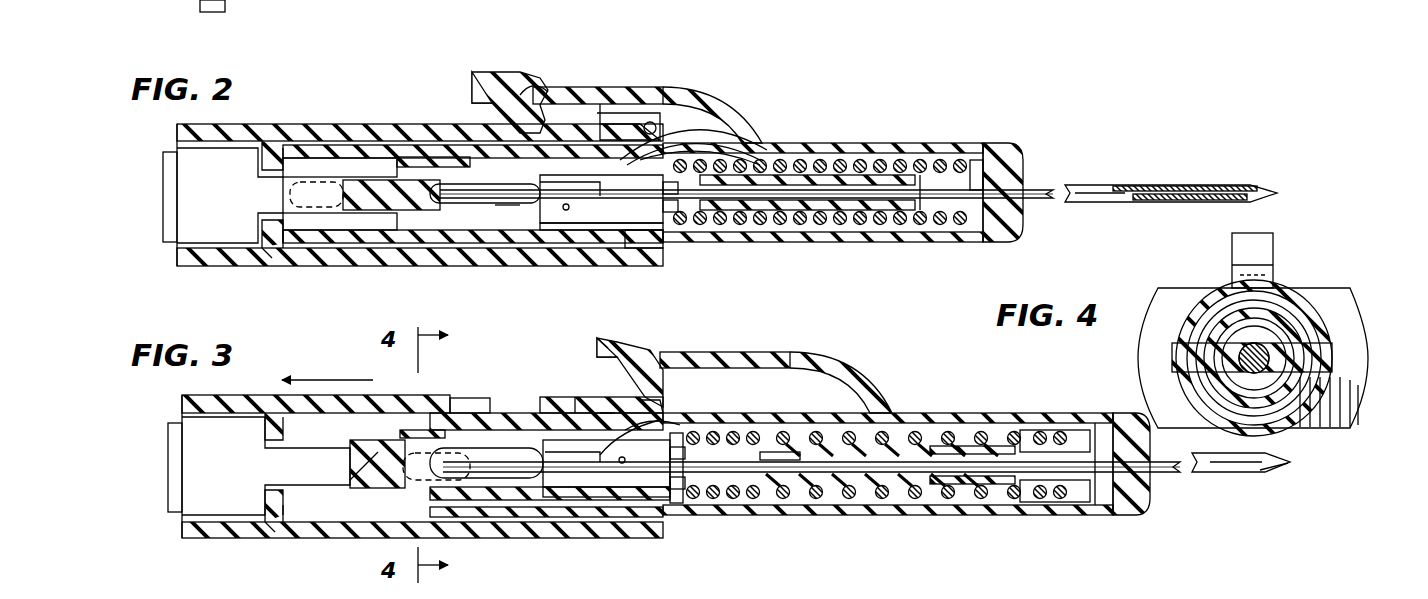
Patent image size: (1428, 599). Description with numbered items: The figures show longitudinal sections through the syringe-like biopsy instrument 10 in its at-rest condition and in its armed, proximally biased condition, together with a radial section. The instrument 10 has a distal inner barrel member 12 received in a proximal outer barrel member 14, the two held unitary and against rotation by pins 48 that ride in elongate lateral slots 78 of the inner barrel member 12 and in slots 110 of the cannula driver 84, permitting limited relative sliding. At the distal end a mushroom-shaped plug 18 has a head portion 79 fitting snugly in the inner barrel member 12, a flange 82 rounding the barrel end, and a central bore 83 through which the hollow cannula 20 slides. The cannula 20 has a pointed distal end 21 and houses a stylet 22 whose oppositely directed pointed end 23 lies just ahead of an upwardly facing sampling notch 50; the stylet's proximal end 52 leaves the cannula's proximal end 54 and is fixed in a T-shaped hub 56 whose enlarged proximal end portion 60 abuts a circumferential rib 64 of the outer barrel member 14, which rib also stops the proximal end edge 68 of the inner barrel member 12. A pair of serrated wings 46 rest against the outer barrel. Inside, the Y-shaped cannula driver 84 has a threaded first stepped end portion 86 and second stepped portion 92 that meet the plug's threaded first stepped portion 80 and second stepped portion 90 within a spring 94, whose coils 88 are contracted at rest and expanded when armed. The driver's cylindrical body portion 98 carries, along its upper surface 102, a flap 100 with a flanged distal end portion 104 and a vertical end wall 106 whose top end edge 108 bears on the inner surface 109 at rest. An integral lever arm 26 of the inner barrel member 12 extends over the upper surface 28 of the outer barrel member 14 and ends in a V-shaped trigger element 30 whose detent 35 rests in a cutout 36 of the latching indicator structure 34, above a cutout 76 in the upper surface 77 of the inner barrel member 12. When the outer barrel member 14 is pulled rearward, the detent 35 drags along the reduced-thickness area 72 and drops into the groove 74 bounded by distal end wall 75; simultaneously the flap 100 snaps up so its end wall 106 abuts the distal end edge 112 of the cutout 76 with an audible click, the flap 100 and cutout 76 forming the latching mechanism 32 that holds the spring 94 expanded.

In FIG. 2, the instrument 10 is at (1133, 134).
In FIG. 2, the inner barrel member 12 is at (908, 143).
In FIG. 3, the inner barrel member 12 is at (933, 413).
In FIG. 4, the inner barrel member 12 is at (1312, 337).
In FIG. 2, the outer barrel member 14 is at (368, 134).
In FIG. 3, the outer barrel member 14 is at (517, 538).
In FIG. 4, the outer barrel member 14 is at (1346, 318).
In FIG. 2, the plug 18 is at (1030, 168).
In FIG. 3, the plug 18 is at (1118, 410).
In FIG. 2, the cannula 20 is at (1036, 200).
In FIG. 3, the cannula 20 is at (1172, 475).
In FIG. 2, the pointed distal end 21 is at (1240, 194).
In FIG. 3, the pointed distal end 21 is at (1262, 472).
In FIG. 2, the stylet 22 is at (1274, 192).
In FIG. 3, the stylet 22 is at (1290, 460).
In FIG. 3, the pointed end 23 is at (1283, 470).
In FIG. 2, the lever arm 26 is at (606, 87).
In FIG. 3, the lever arm 26 is at (735, 352).
In FIG. 4, the lever arm 26 is at (1272, 274).
In FIG. 2, the upper surface 28 is at (266, 124).
In FIG. 3, the upper surface 28 is at (395, 395).
In FIG. 2, the trigger element 30 is at (510, 85).
In FIG. 3, the trigger element 30 is at (645, 352).
In FIG. 4, the trigger element 30 is at (1296, 290).
In FIG. 3, the latching mechanism 32 is at (606, 338).
In FIG. 2, the latching indicator structure 34 is at (576, 112).
In FIG. 3, the latching indicator structure 34 is at (527, 385).
In FIG. 2, the detent 35 is at (536, 92).
In FIG. 2, the cutout 36 is at (540, 198).
In FIG. 3, the cutout 36 is at (535, 415).
In FIG. 2, the wings 46 is at (165, 185).
In FIG. 3, the wings 46 is at (175, 465).
In FIG. 4, the pins 48 is at (1332, 360).
In FIG. 2, the sampling notch 50 is at (1192, 186).
In FIG. 2, the proximal end 52 is at (600, 230).
In FIG. 3, the proximal end 52 is at (580, 500).
In FIG. 2, the proximal end 54 is at (685, 232).
In FIG. 3, the proximal end 54 is at (695, 500).
In FIG. 2, the hub 56 is at (358, 166).
In FIG. 3, the hub 56 is at (383, 492).
In FIG. 4, the hub 56 is at (1346, 416).
In FIG. 2, the proximal end portion 60 is at (192, 205).
In FIG. 3, the proximal end portion 60 is at (200, 475).
In FIG. 2, the circumferential rib 64 is at (265, 262).
In FIG. 3, the circumferential rib 64 is at (275, 535).
In FIG. 2, the proximal end edge 68 is at (295, 258).
In FIG. 3, the proximal end edge 68 is at (445, 537).
In FIG. 2, the reduced in thickness area 72 is at (600, 104).
In FIG. 3, the reduced in thickness area 72 is at (576, 397).
In FIG. 2, the groove 74 is at (665, 118).
In FIG. 3, the groove 74 is at (655, 398).
In FIG. 2, the distal end wall 75 is at (690, 125).
In FIG. 2, the cutout 76 is at (496, 215).
In FIG. 3, the cutout 76 is at (603, 410).
In FIG. 2, the upper surface 77 is at (440, 145).
In FIG. 3, the upper surface 77 is at (556, 397).
In FIG. 2, the lateral slots 78 is at (320, 208).
In FIG. 3, the lateral slots 78 is at (436, 466).
In FIG. 2, the head portion 79 is at (1000, 170).
In FIG. 3, the head portion 79 is at (1145, 505).
In FIG. 2, the first inwardly stepped proximal portion 80 is at (950, 226).
In FIG. 3, the first inwardly stepped proximal portion 80 is at (1046, 502).
In FIG. 2, the flange 82 is at (1000, 245).
In FIG. 3, the flange 82 is at (1105, 518).
In FIG. 2, the central longitudinal bore 83 is at (968, 160).
In FIG. 3, the central longitudinal bore 83 is at (1100, 455).
In FIG. 2, the cannula driver 84 is at (390, 222).
In FIG. 3, the cannula driver 84 is at (738, 512).
In FIG. 4, the cannula driver 84 is at (1322, 388).
In FIG. 2, the first inwardly stepped distal end portion 86 is at (736, 232).
In FIG. 3, the first inwardly stepped distal end portion 86 is at (705, 437).
In FIG. 2, the spring coils 88 is at (818, 226).
In FIG. 2, the second inwardly stepped portion 90 is at (862, 175).
In FIG. 3, the second inwardly stepped portion 90 is at (992, 505).
In FIG. 2, the second inwardly stepped portion 92 is at (797, 160).
In FIG. 3, the second inwardly stepped portion 92 is at (805, 498).
In FIG. 2, the spring 94 is at (876, 226).
In FIG. 3, the spring 94 is at (890, 492).
In FIG. 2, the body portion 98 is at (648, 250).
In FIG. 3, the body portion 98 is at (470, 405).
In FIG. 2, the flap 100 is at (596, 236).
In FIG. 3, the flap 100 is at (590, 498).
In FIG. 2, the upper surface 102 is at (404, 157).
In FIG. 3, the upper surface 102 is at (398, 434).
In FIG. 2, the distal end portion 104 is at (700, 135).
In FIG. 3, the distal end portion 104 is at (604, 500).
In FIG. 2, the vertical distal end wall 106 is at (725, 160).
In FIG. 3, the vertical distal end wall 106 is at (662, 425).
In FIG. 2, the top end edge 108 is at (715, 150).
In FIG. 2, the inner surface 109 is at (640, 95).
In FIG. 2, the slots 110 is at (478, 255).
In FIG. 3, the slots 110 is at (492, 447).
In FIG. 2, the distal end edge 112 is at (566, 212).
In FIG. 3, the distal end edge 112 is at (623, 464).